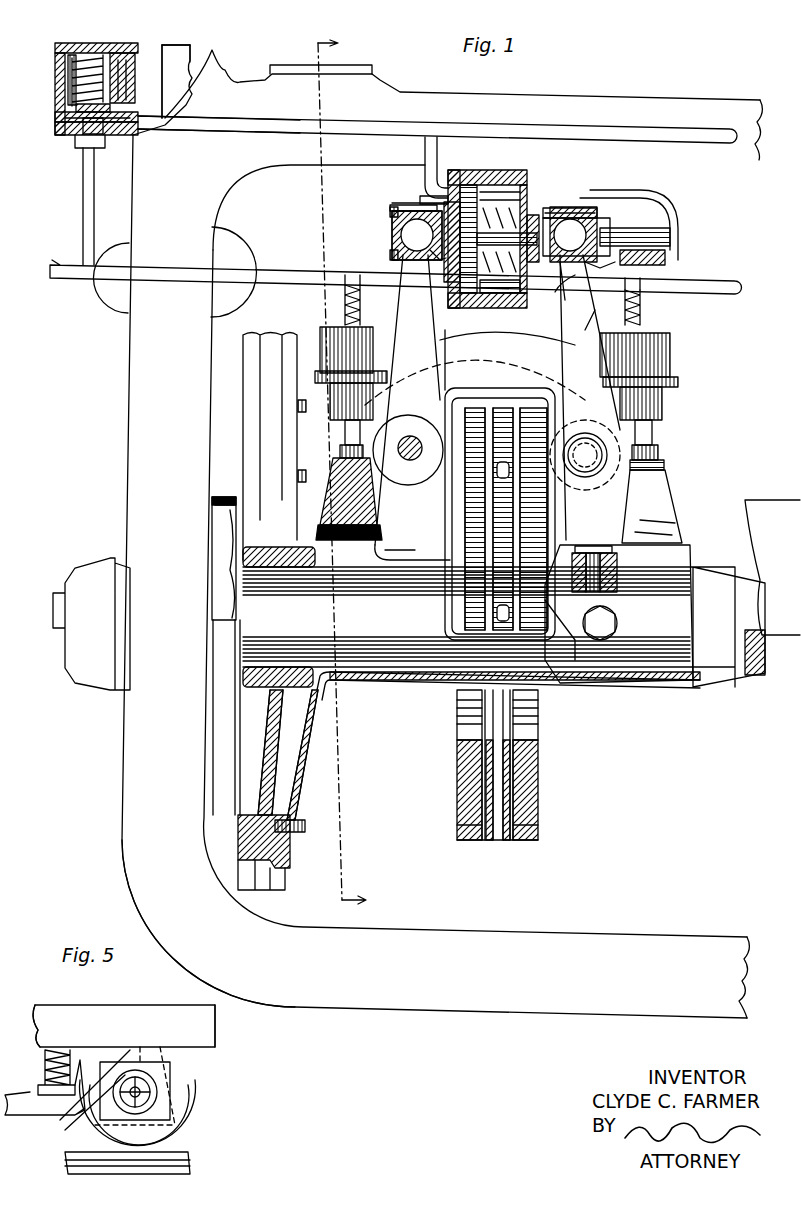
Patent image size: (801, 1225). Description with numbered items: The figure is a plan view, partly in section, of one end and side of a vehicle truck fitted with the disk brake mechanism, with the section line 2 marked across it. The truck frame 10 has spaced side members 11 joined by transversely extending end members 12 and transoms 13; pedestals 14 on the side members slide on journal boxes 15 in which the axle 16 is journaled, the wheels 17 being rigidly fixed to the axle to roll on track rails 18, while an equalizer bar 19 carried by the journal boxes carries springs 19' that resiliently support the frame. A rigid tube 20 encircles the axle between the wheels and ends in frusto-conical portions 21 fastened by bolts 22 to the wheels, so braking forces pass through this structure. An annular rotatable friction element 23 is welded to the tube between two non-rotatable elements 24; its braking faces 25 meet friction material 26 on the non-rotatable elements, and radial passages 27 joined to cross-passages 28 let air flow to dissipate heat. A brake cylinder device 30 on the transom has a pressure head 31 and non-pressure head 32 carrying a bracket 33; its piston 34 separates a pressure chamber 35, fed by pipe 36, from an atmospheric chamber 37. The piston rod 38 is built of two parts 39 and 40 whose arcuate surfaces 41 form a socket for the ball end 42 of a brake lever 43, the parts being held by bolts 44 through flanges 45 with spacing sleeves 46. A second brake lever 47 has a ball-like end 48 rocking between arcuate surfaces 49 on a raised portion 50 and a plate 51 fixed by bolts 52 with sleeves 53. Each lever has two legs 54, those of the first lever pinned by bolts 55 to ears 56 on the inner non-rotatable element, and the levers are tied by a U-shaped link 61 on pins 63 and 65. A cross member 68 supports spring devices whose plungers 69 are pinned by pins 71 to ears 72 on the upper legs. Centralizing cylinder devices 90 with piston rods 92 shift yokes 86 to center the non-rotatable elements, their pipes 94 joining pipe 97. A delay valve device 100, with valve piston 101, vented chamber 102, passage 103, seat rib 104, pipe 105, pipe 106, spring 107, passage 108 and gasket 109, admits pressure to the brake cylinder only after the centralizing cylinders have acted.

In FIG. 1, the truck frame 10 is at (235, 75).
In FIG. 5, the truck frame 10 is at (45, 1018).
In FIG. 1, the side member 11 is at (128, 772).
In FIG. 5, the side member 11 is at (120, 1018).
In FIG. 1, the end member 12 is at (435, 995).
In FIG. 5, the end member 12 is at (218, 1040).
In FIG. 1, the transom 13 is at (626, 105).
In FIG. 5, the pedestal 14 is at (172, 1070).
In FIG. 1, the journal box 15 is at (115, 692).
In FIG. 5, the journal box 15 is at (160, 1108).
In FIG. 1, the axle 16 is at (745, 672).
In FIG. 1, the wheel 17 is at (245, 840).
In FIG. 5, the wheel 17 is at (196, 1095).
In FIG. 1, the track rail 18 is at (262, 880).
In FIG. 5, the track rail 18 is at (190, 1160).
In FIG. 1, the equalizer bar 19 is at (178, 63).
In FIG. 5, the equalizer bar 19 is at (44, 1103).
In FIG. 1, the spring 19' is at (178, 270).
In FIG. 5, the spring 19' is at (39, 1072).
In FIG. 1, the section line 2 is at (332, 471).
In FIG. 1, the rigid tube 20 is at (432, 672).
In FIG. 1, the frusto-conical shaped portion 21 is at (308, 735).
In FIG. 1, the bolt 22 is at (298, 470).
In FIG. 1, the rotatable friction brake element 23 is at (486, 840).
In FIG. 1, the non-rotatable friction braking element 24 is at (468, 792).
In FIG. 1, the braking face 25 is at (468, 832).
In FIG. 1, the friction material 26 is at (475, 766).
In FIG. 1, the radial passage 27 is at (498, 468).
In FIG. 1, the cross-passage 28 is at (498, 732).
In FIG. 1, the brake cylinder device 30 is at (510, 180).
In FIG. 1, the pressure head 31 is at (455, 178).
In FIG. 1, the non-pressure head 32 is at (522, 300).
In FIG. 1, the bracket 33 is at (668, 202).
In FIG. 1, the piston 34 is at (472, 185).
In FIG. 1, the pressure chamber 35 is at (420, 200).
In FIG. 1, the pipe 36 is at (425, 150).
In FIG. 1, the chamber 37 is at (473, 318).
In FIG. 1, the piston rod 38 is at (668, 260).
In FIG. 1, the piston rod part 39 is at (507, 256).
In FIG. 1, the piston rod part 40 is at (672, 236).
In FIG. 1, the arcuate surface 41 is at (573, 234).
In FIG. 1, the ball end 42 is at (578, 298).
In FIG. 1, the brake lever 43 is at (602, 321).
In FIG. 1, the bolt 44 is at (612, 236).
In FIG. 1, the flange 45 is at (590, 264).
In FIG. 1, the sleeve 46 is at (565, 210).
In FIG. 1, the brake lever 47 is at (415, 298).
In FIG. 1, the ball like end 48 is at (390, 240).
In FIG. 1, the arcuate surface 49 is at (417, 235).
In FIG. 1, the raised portion 50 is at (430, 252).
In FIG. 1, the plate 51 is at (395, 225).
In FIG. 1, the bolt 52 is at (390, 211).
In FIG. 1, the sleeve 53 is at (400, 205).
In FIG. 1, the leg 54 is at (470, 350).
In FIG. 1, the bolt 55 is at (602, 640).
In FIG. 1, the ear 56 is at (560, 660).
In FIG. 1, the tie link 61 is at (445, 318).
In FIG. 1, the pin 63 is at (665, 466).
In FIG. 1, the pin 65 is at (412, 462).
In FIG. 1, the cross member 68 is at (230, 495).
In FIG. 1, the plunger 69 is at (614, 575).
In FIG. 1, the pin 71 is at (600, 505).
In FIG. 1, the ear 72 is at (617, 562).
In FIG. 1, the yoke 86 is at (395, 528).
In FIG. 1, the centralizing cylinder device 90 is at (380, 322).
In FIG. 1, the piston rod 92 is at (345, 432).
In FIG. 1, the pipe 94 is at (345, 308).
In FIG. 1, the pipe 97 is at (275, 265).
In FIG. 1, the delay valve device 100 is at (66, 80).
In FIG. 1, the valve piston 101 is at (62, 97).
In FIG. 1, the chamber 102 is at (60, 62).
In FIG. 1, the passage 103 is at (93, 43).
In FIG. 1, the seat rib 104 is at (72, 135).
In FIG. 1, the pipe 105 is at (88, 188).
In FIG. 1, the pipe 106 is at (187, 132).
In FIG. 1, the spring 107 is at (56, 117).
In FIG. 1, the passage 108 is at (122, 132).
In FIG. 1, the gasket 109 is at (118, 45).